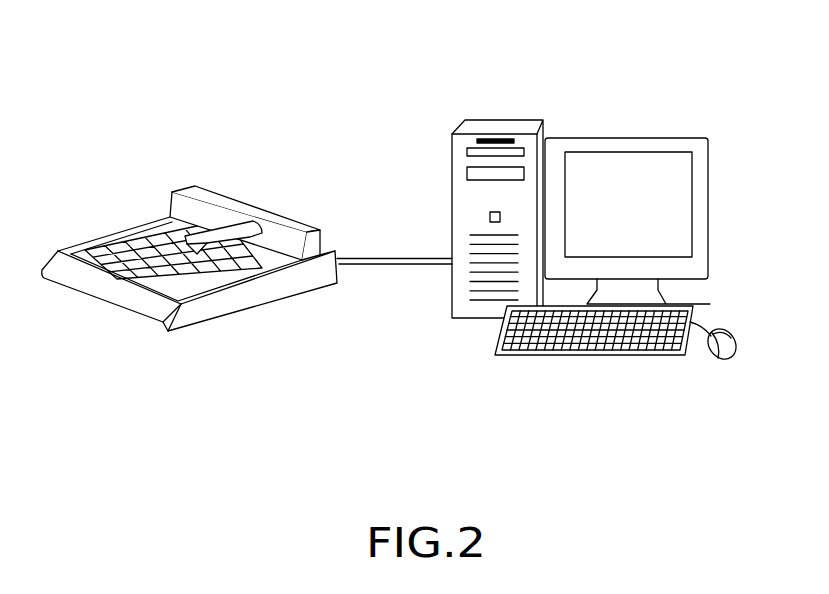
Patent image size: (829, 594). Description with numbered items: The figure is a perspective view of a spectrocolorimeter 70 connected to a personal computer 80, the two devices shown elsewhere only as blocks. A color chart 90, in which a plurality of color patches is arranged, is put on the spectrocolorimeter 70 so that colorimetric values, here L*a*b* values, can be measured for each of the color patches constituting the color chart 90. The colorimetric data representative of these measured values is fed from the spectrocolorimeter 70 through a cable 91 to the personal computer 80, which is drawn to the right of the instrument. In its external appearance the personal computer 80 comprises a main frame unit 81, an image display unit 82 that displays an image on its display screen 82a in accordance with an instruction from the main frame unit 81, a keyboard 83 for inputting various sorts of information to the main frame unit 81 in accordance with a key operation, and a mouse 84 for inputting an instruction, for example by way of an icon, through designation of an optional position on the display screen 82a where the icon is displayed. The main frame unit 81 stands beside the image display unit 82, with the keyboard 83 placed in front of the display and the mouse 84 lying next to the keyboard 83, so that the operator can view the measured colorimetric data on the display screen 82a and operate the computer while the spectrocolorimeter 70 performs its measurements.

The spectrocolorimeter 70 is at (178, 210).
The color chart 90 is at (80, 250).
The cable 91 is at (390, 257).
The personal computer 80 is at (581, 196).
The main frame unit 81 is at (452, 181).
The image display unit 82 is at (628, 137).
The display screen 82a is at (467, 150).
The keyboard 83 is at (695, 307).
The mouse 84 is at (738, 345).